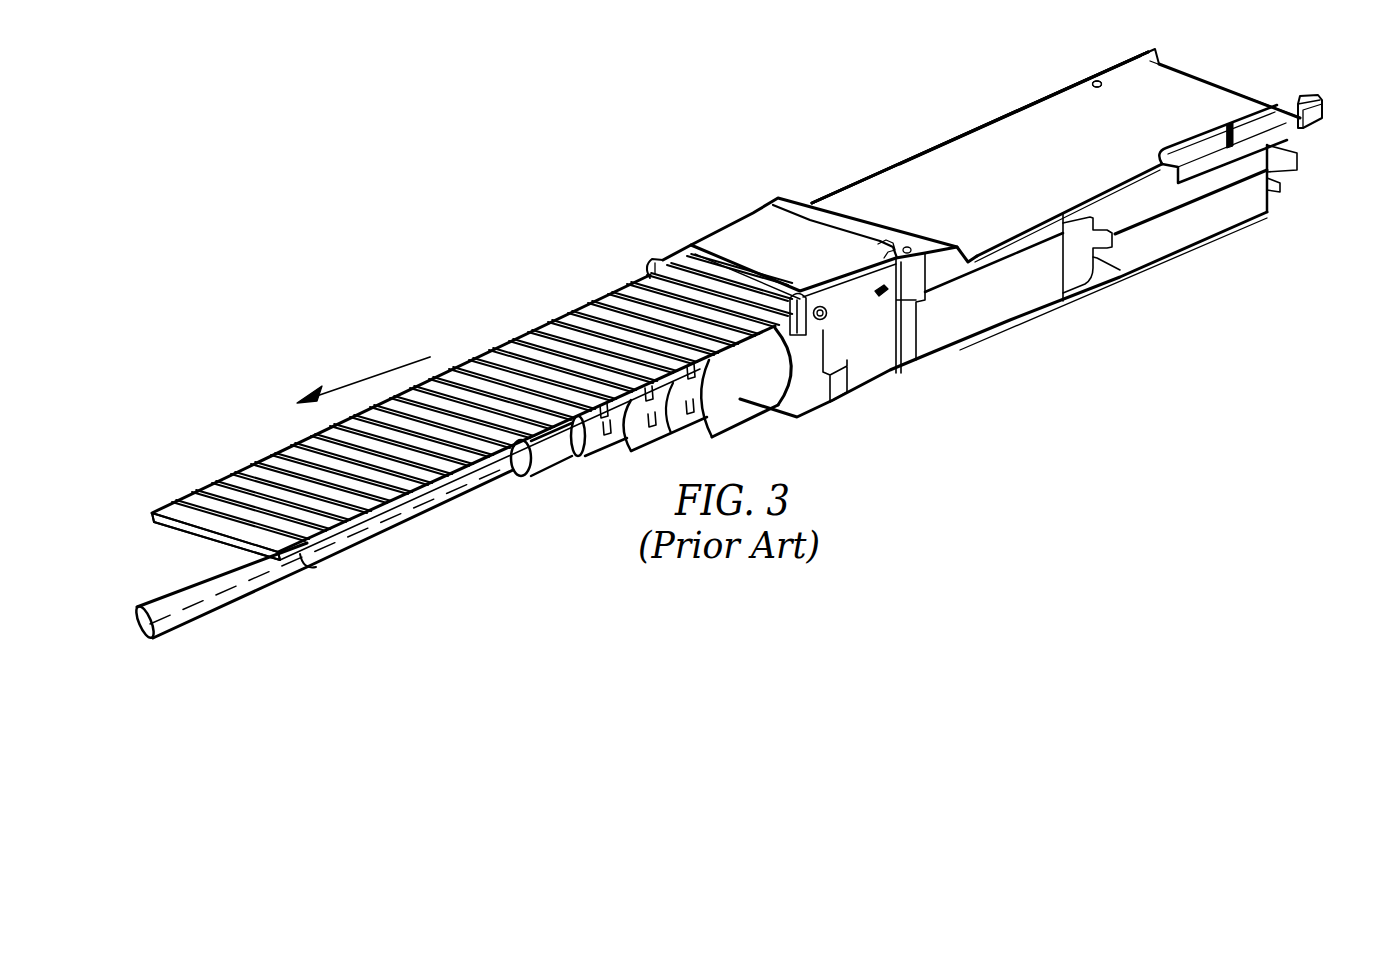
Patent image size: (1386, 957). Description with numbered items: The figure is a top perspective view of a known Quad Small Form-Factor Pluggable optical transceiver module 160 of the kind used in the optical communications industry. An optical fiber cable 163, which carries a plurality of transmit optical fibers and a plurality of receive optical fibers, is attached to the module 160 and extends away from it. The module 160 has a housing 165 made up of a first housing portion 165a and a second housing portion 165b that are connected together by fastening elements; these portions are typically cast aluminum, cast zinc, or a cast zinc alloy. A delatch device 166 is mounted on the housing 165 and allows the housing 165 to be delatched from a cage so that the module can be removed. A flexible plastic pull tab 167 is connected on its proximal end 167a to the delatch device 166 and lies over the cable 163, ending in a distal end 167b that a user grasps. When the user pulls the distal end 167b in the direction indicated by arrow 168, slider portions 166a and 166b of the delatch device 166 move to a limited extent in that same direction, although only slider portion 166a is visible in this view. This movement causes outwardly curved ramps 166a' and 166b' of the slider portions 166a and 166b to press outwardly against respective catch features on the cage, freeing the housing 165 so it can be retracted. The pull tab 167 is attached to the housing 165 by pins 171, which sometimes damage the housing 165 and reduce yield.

The optical transceiver module 160 is at (786, 112).
The optical fiber cable 163 is at (270, 580).
The housing 165 is at (1210, 83).
The first housing portion 165a is at (1070, 102).
The second housing portion 165b is at (1143, 263).
The delatch device 166 is at (768, 232).
The slider portion 166a is at (1111, 258).
The outwardly curved ramp 166a' is at (1140, 270).
The slider portion 166b is at (975, 127).
The outwardly curved ramp 166b' is at (1020, 110).
The flexible plastic pull tab 167 is at (482, 380).
The proximal end 167a is at (700, 272).
The distal end 167b is at (207, 513).
The arrow 168 is at (343, 378).
The pins 171 is at (827, 315).